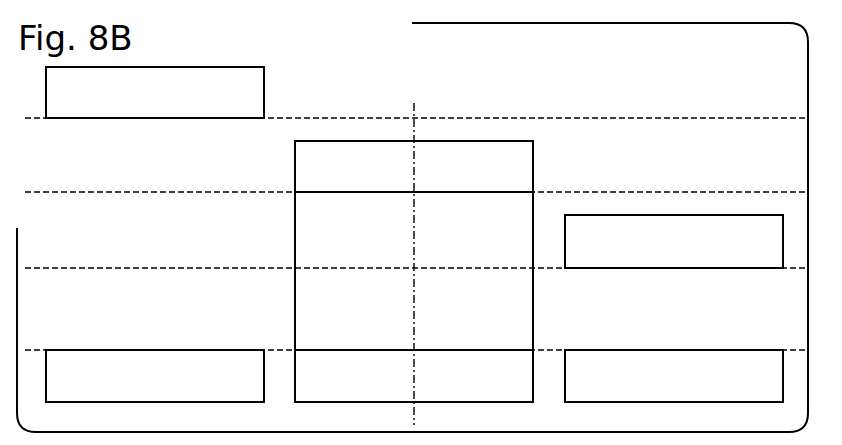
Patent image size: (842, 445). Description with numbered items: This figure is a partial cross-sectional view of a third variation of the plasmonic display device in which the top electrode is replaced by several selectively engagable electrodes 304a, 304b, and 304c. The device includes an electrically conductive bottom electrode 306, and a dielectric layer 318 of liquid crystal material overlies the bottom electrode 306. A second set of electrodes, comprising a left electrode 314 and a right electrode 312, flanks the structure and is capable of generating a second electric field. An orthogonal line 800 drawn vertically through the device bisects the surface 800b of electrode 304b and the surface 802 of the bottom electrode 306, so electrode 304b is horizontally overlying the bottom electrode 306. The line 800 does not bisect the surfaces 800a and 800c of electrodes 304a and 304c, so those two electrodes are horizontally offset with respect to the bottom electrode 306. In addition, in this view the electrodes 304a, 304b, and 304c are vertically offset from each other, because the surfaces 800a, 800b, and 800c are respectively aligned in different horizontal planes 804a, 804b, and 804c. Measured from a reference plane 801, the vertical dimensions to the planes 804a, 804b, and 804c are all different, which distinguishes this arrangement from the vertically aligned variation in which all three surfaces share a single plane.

The selectively engagable electrode 304a is at (181, 103).
The selectively engagable electrode 304b is at (402, 175).
The selectively engagable electrode 304c is at (699, 251).
The dielectric layer 318 is at (396, 310).
The bottom electrode 306 is at (396, 384).
The left electrode 314 is at (175, 386).
The right electrode 312 is at (694, 386).
The orthogonal line 800 is at (417, 228).
The surface of electrode 304a 800a is at (152, 119).
The surface of electrode 304b 800b is at (343, 193).
The surface of electrode 304c 800c is at (670, 269).
The plane 801 is at (35, 348).
The surface of bottom electrode 802 is at (499, 346).
The horizontal plane 804a is at (295, 117).
The horizontal plane 804b is at (62, 190).
The horizontal plane 804c is at (792, 270).